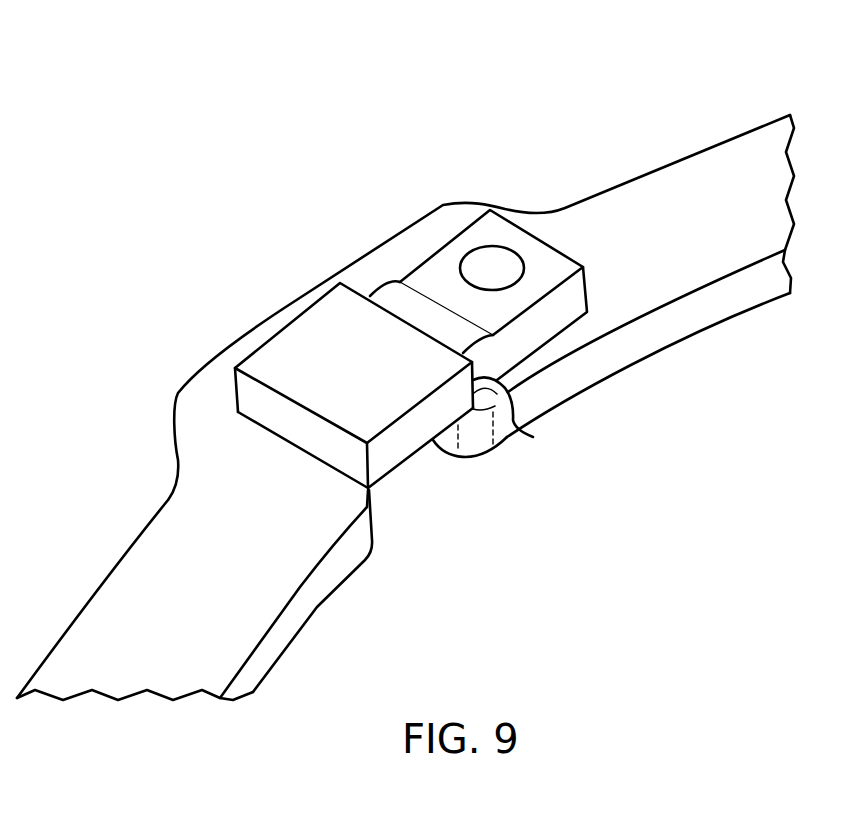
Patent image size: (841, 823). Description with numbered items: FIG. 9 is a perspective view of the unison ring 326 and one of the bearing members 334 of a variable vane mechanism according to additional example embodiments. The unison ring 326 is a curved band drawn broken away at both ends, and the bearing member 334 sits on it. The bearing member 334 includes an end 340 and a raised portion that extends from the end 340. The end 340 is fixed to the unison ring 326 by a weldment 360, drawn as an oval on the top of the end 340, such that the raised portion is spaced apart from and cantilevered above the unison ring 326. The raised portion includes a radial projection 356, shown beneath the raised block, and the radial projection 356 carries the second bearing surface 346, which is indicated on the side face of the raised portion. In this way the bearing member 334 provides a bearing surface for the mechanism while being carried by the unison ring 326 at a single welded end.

The unison ring 326 is at (742, 126).
The bearing member 334 is at (345, 383).
The end 340 is at (478, 269).
The second bearing surface 346 is at (384, 464).
The radial projection 356 is at (533, 437).
The weldment 360 is at (497, 263).